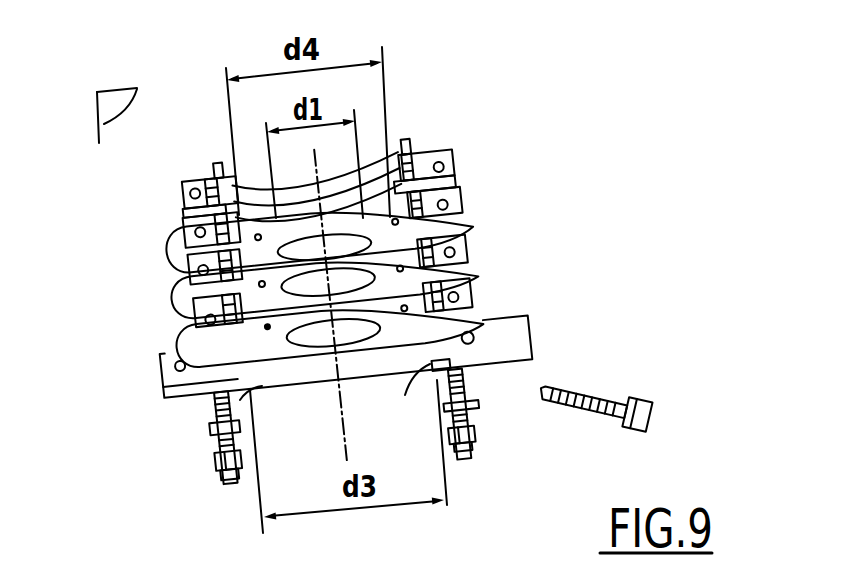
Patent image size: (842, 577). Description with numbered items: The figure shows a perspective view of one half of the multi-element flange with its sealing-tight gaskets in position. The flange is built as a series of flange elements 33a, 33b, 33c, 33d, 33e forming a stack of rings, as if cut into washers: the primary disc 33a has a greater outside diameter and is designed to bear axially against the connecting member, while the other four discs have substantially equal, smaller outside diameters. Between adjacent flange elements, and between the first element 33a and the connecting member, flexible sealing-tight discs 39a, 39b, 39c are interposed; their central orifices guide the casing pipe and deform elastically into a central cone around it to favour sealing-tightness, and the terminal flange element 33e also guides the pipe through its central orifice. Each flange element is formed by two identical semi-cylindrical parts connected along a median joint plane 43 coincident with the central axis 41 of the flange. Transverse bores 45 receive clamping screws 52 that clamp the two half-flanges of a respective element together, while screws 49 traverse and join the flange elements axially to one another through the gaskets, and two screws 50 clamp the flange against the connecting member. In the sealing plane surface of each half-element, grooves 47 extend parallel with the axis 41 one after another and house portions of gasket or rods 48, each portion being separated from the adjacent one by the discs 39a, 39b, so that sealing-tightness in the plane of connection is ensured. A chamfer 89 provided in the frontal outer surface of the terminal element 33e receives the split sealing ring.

The primary disc 33a is at (524, 330).
The flange element 33b is at (480, 290).
The flange element 33c is at (478, 243).
The flange element 33d is at (192, 232).
The terminal flange element 33e is at (456, 161).
The sealing-tight disc 39a is at (478, 203).
The sealing-tight disc 39b is at (482, 270).
The sealing-tight disc 39c is at (500, 310).
The central axis 41 is at (334, 440).
The median joint plane 43 is at (122, 115).
The transverse bores 45 is at (472, 346).
The grooves 47 is at (438, 156).
The gasket portions or rods 48 is at (229, 178).
The screws 49 is at (413, 373).
The clamping screws 50 is at (225, 475).
The clamping screws 52 is at (612, 392).
The chamfer 89 is at (381, 163).